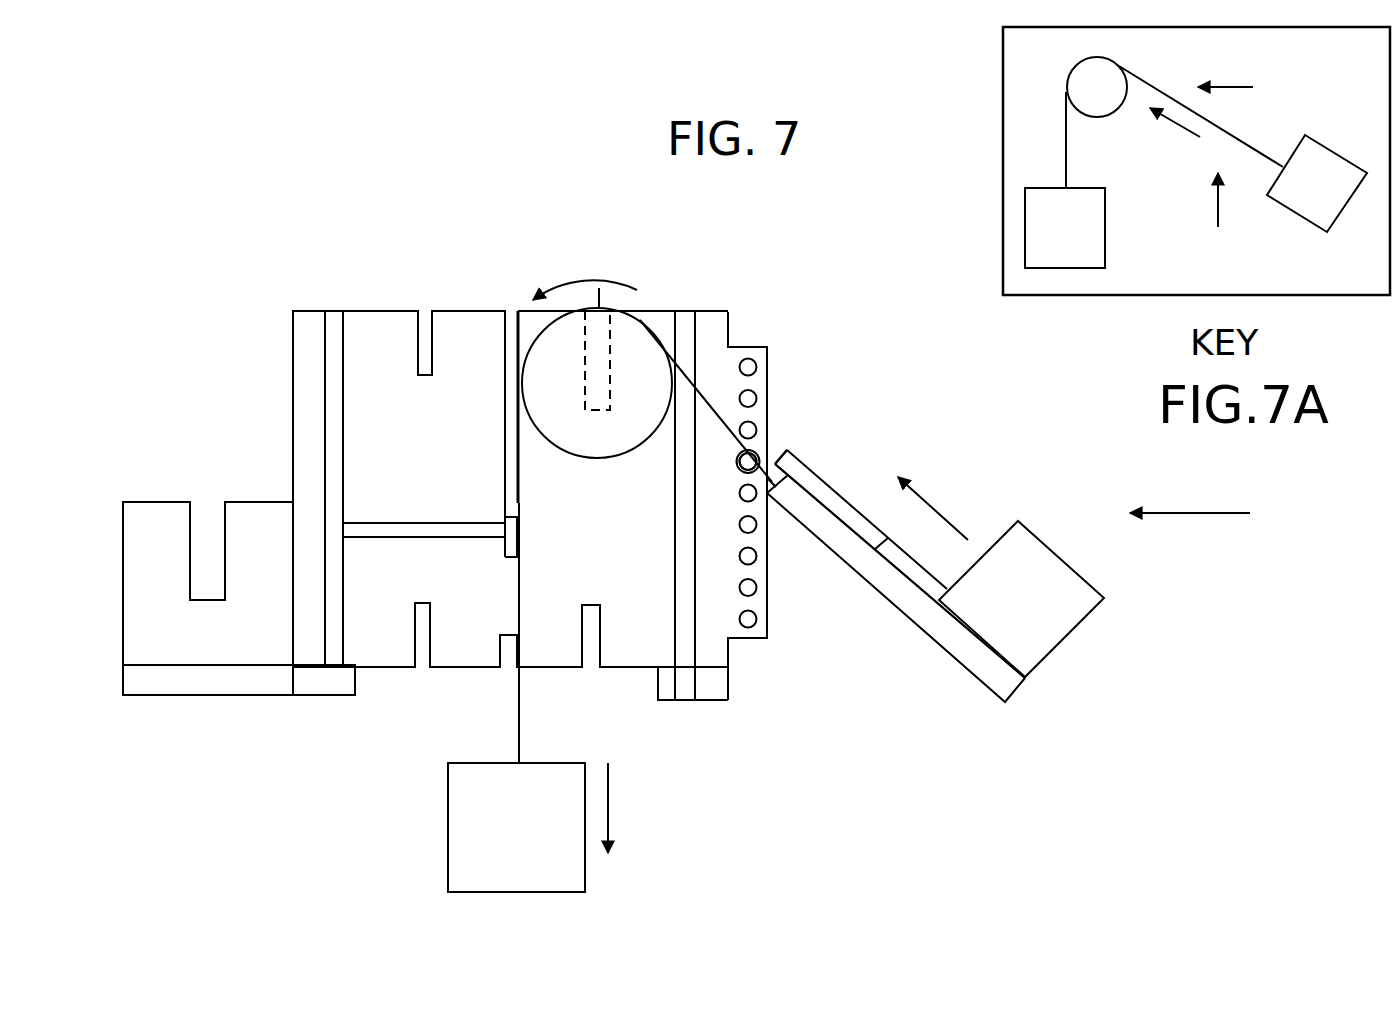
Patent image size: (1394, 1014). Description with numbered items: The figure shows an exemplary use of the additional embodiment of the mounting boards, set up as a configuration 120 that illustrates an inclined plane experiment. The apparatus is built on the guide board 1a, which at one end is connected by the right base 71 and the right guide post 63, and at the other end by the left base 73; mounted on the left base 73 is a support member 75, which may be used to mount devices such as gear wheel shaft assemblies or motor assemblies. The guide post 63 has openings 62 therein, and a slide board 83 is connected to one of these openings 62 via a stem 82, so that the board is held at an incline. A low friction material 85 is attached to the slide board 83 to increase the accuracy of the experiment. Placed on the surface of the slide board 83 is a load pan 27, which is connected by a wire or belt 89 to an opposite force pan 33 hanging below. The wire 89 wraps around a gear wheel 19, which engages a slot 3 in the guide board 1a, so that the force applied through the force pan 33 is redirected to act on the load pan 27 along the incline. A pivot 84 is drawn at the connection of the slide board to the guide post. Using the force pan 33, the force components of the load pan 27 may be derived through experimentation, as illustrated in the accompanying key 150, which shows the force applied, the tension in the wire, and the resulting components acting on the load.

In FIG. 7, the guide board 1a is at (510, 537).
In FIG. 7, the slot 3 is at (606, 407).
In FIG. 7, the gear wheel 19 is at (607, 273).
In FIG. 7, the load pan 27 is at (1058, 647).
In FIG. 7, the force pan 33 is at (565, 862).
In FIG. 7, the opening 62 is at (742, 453).
In FIG. 7, the right guide post 63 is at (748, 347).
In FIG. 7, the right base 71 is at (700, 703).
In FIG. 7, the left base 73 is at (243, 680).
In FIG. 7, the support member 75 is at (239, 598).
In FIG. 7, the stem 82 is at (772, 488).
In FIG. 7, the slide board 83 is at (903, 592).
In FIG. 7, the pivot hole 84 is at (752, 480).
In FIG. 7, the low friction material 85 is at (875, 548).
In FIG. 7, the wire or belt 89 is at (813, 468).
In FIG. 7, the inclined plane configuration 120 is at (1220, 512).
In FIG. 7A, the key 150 is at (977, 242).